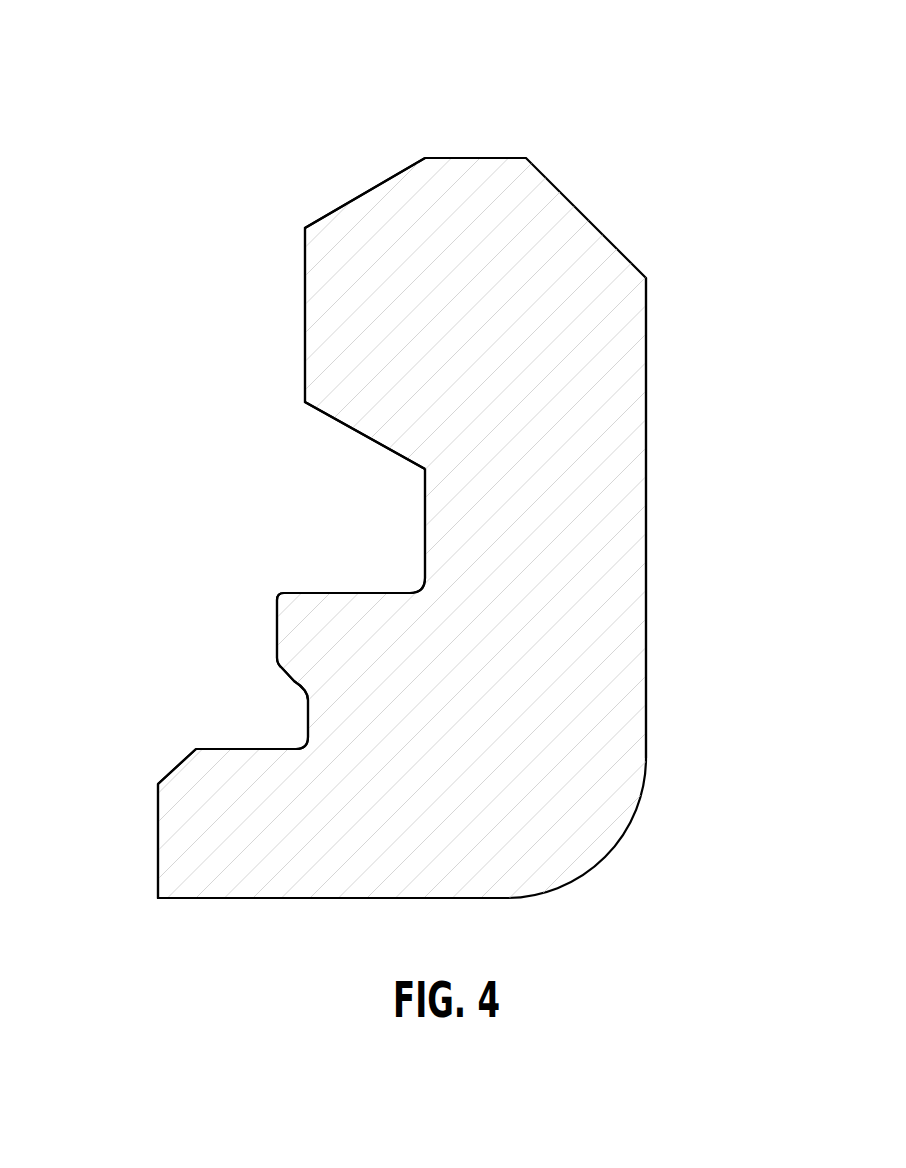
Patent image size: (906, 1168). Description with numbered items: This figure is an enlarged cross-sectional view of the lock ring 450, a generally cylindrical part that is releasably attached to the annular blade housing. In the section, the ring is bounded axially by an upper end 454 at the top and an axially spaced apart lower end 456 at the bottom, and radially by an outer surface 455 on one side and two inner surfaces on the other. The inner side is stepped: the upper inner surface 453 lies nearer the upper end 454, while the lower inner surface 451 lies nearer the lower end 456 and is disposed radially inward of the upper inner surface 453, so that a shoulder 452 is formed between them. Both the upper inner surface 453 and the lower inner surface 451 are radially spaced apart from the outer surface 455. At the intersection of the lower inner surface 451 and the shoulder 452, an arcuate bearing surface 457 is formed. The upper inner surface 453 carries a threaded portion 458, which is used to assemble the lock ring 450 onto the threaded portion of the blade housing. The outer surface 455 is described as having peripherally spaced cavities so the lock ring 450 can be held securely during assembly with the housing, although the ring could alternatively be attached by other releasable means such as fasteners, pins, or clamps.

The lock ring 450 is at (642, 90).
The lower inner surface 451 is at (157, 857).
The shoulder 452 is at (241, 749).
The upper inner surface 453 is at (425, 520).
The upper end 454 is at (469, 158).
The outer surface 455 is at (646, 540).
The lower end 456 is at (334, 898).
The arcuate bearing surface 457 is at (173, 770).
The threaded portion 458 is at (305, 325).